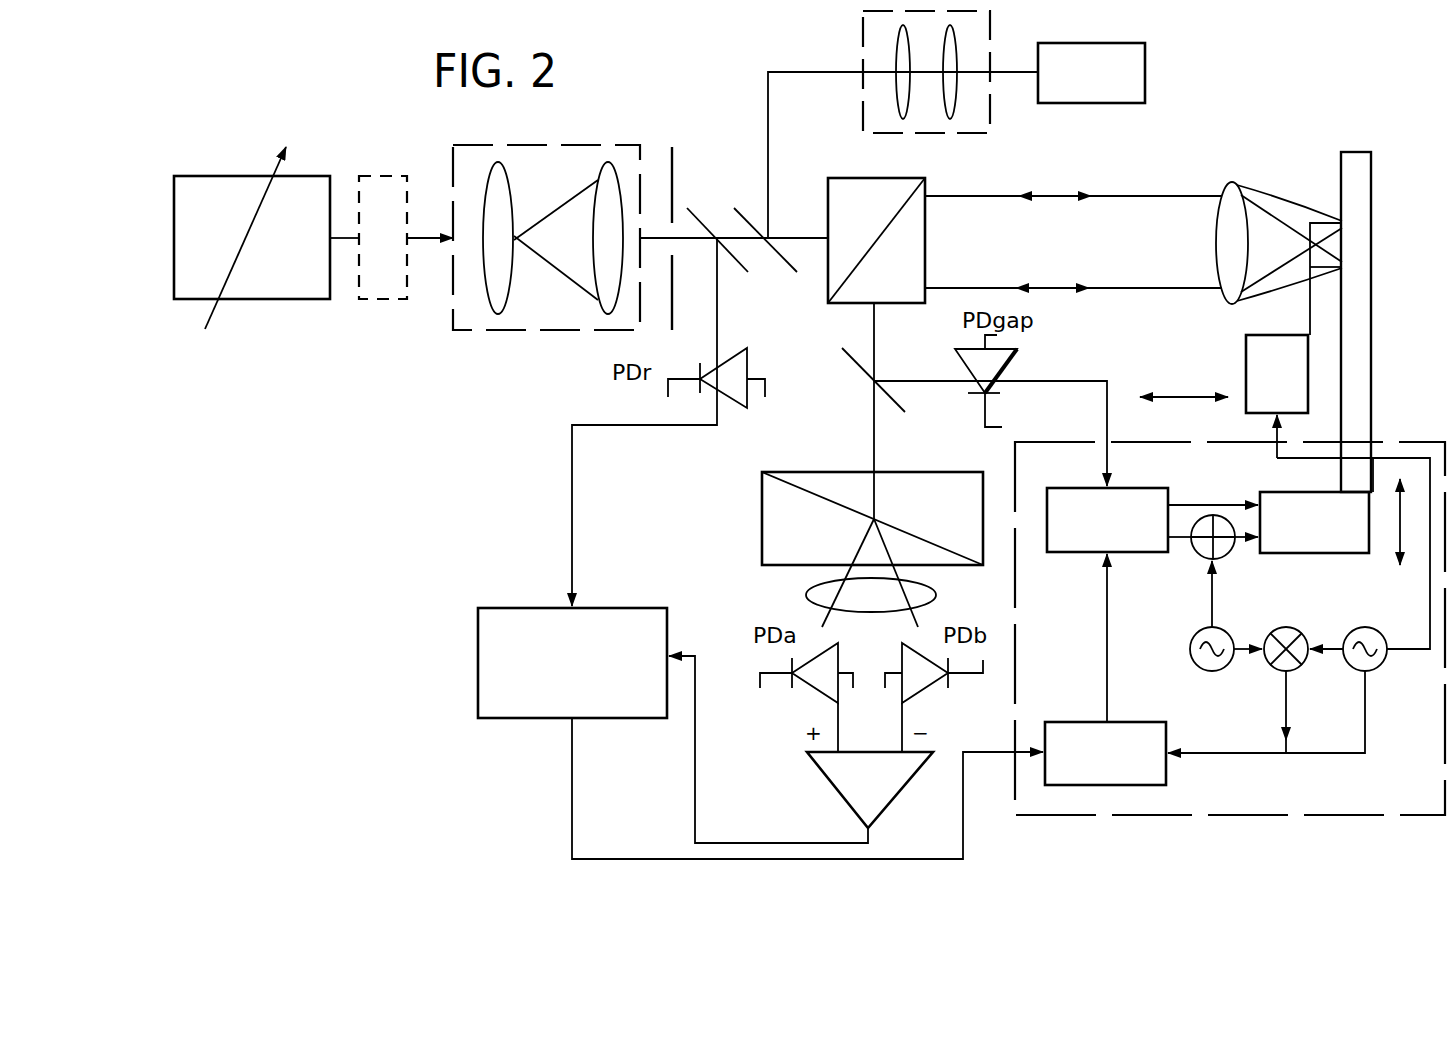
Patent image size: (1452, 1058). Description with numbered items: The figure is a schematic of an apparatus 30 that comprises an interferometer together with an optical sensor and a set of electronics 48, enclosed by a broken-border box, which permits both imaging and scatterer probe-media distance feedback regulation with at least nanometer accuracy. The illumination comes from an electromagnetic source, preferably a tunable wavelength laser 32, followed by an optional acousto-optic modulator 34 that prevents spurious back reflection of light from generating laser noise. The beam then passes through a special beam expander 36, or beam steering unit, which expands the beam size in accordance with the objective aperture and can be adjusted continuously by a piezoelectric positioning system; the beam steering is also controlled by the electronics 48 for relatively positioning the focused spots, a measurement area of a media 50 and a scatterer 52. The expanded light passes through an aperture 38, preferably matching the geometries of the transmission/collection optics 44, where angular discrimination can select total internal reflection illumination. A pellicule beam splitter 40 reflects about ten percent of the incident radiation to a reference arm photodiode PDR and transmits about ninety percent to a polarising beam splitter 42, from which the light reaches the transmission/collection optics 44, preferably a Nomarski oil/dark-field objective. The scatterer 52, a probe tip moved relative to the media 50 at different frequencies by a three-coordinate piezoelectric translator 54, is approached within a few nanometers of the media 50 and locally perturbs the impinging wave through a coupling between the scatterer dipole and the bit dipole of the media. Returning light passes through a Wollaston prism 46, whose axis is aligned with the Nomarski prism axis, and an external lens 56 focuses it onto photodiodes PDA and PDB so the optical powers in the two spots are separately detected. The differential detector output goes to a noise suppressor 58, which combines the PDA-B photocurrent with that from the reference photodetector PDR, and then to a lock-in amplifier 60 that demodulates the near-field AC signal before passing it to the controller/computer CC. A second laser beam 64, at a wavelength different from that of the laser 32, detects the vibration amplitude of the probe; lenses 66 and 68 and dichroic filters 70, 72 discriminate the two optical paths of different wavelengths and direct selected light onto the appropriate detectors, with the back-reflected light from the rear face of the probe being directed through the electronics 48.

The apparatus 30 is at (308, 655).
The laser 32 is at (297, 300).
The acousto-optic modulator 34 is at (373, 300).
The beam expander 36 is at (565, 330).
The aperture 38 is at (672, 200).
The pellicule beam splitter 40 is at (738, 262).
The polarising beam splitter 42 is at (866, 304).
The transmission/collection optics 44 is at (1228, 193).
The Wollaston prism 46 is at (762, 533).
The set of electronics 48 is at (1138, 816).
The media 50 is at (1350, 150).
The scatterer 52 is at (1325, 222).
The three-coordinate piezoelectric translator 54 is at (1245, 382).
The external lens 56 is at (812, 598).
The noise suppressor 58 is at (478, 672).
The lock-in amplifier 60 is at (1128, 722).
The second laser beam 64 is at (1150, 72).
The lens 66 is at (898, 110).
The lens 68 is at (952, 110).
The dichroic filter 70 is at (783, 262).
The dichroic filter 72 is at (910, 398).